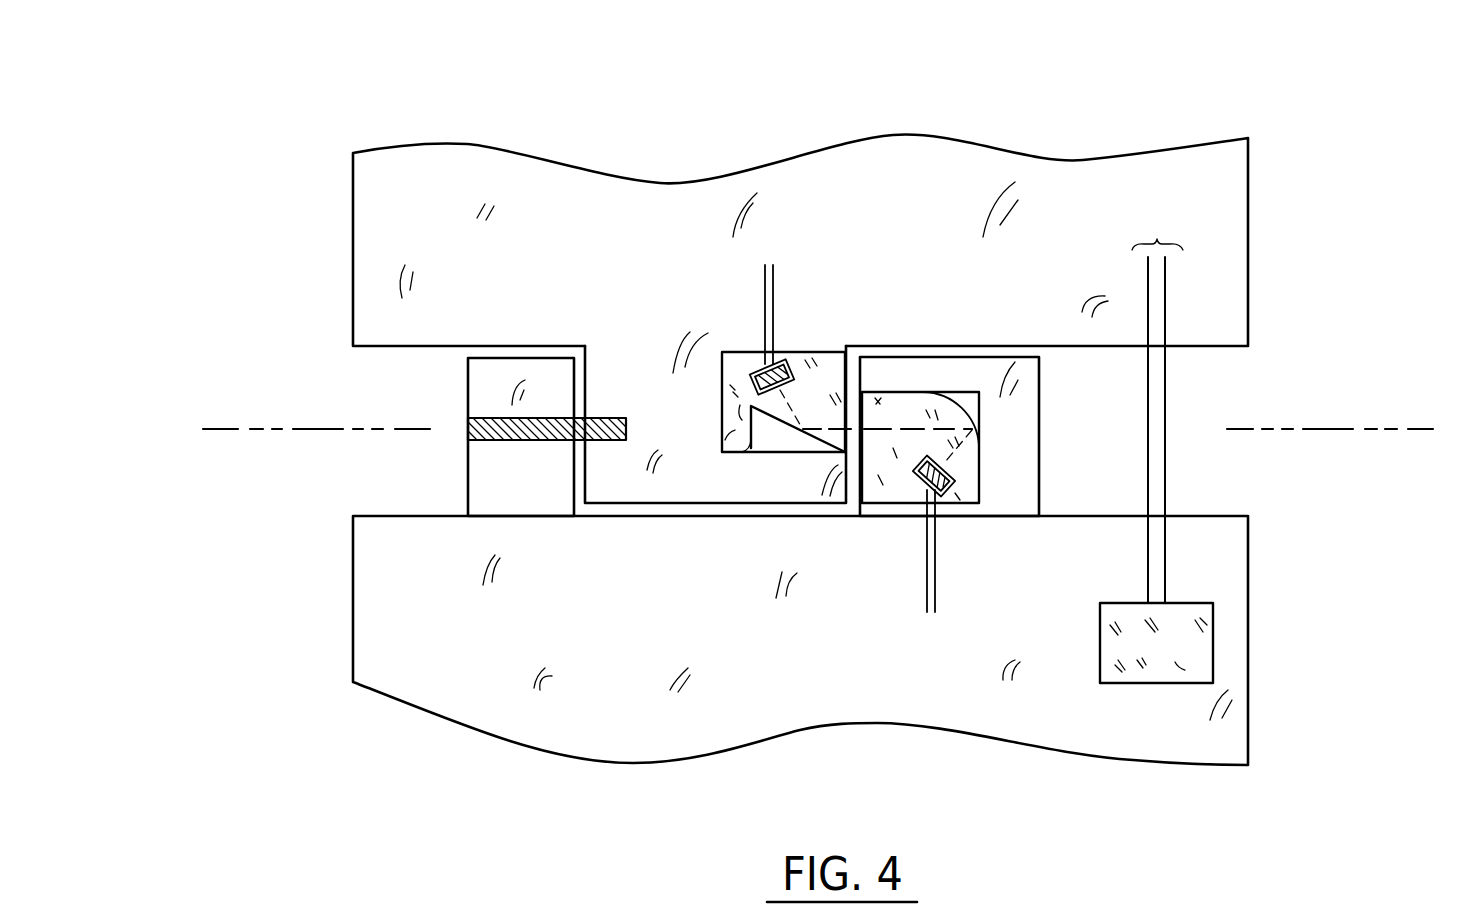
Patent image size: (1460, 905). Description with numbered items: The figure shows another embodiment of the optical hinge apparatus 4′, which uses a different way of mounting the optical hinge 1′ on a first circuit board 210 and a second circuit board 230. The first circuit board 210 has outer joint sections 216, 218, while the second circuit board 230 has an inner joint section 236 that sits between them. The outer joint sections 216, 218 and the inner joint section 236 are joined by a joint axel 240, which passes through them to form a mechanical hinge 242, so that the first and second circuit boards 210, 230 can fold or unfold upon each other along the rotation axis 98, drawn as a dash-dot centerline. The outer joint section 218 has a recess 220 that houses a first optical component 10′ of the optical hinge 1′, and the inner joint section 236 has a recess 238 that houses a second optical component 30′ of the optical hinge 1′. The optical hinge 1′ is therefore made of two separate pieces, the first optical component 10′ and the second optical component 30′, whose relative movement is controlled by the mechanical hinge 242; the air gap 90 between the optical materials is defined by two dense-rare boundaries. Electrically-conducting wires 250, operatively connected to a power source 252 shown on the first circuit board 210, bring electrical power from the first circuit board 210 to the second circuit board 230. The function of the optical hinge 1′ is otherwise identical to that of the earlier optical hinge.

The second circuit board 230 is at (423, 190).
The first circuit board 210 is at (500, 685).
The outer joint section 216 is at (482, 367).
The joint axel 240 is at (468, 441).
The inner joint section 236 is at (625, 480).
The second optical component 30′ is at (742, 367).
The recess 238 is at (770, 445).
The air gap 90 is at (852, 415).
The mechanical hinge 242 is at (729, 570).
The outer joint section 218 is at (1023, 481).
The recess 220 is at (965, 390).
The first optical component 10′ is at (958, 500).
The electrically-conducting wires 250 is at (1157, 240).
The power source 252 is at (1193, 647).
The rotation axis 98 is at (233, 428).
The optical hinge 1′ is at (887, 303).
The optical hinge apparatus 4′ is at (297, 699).